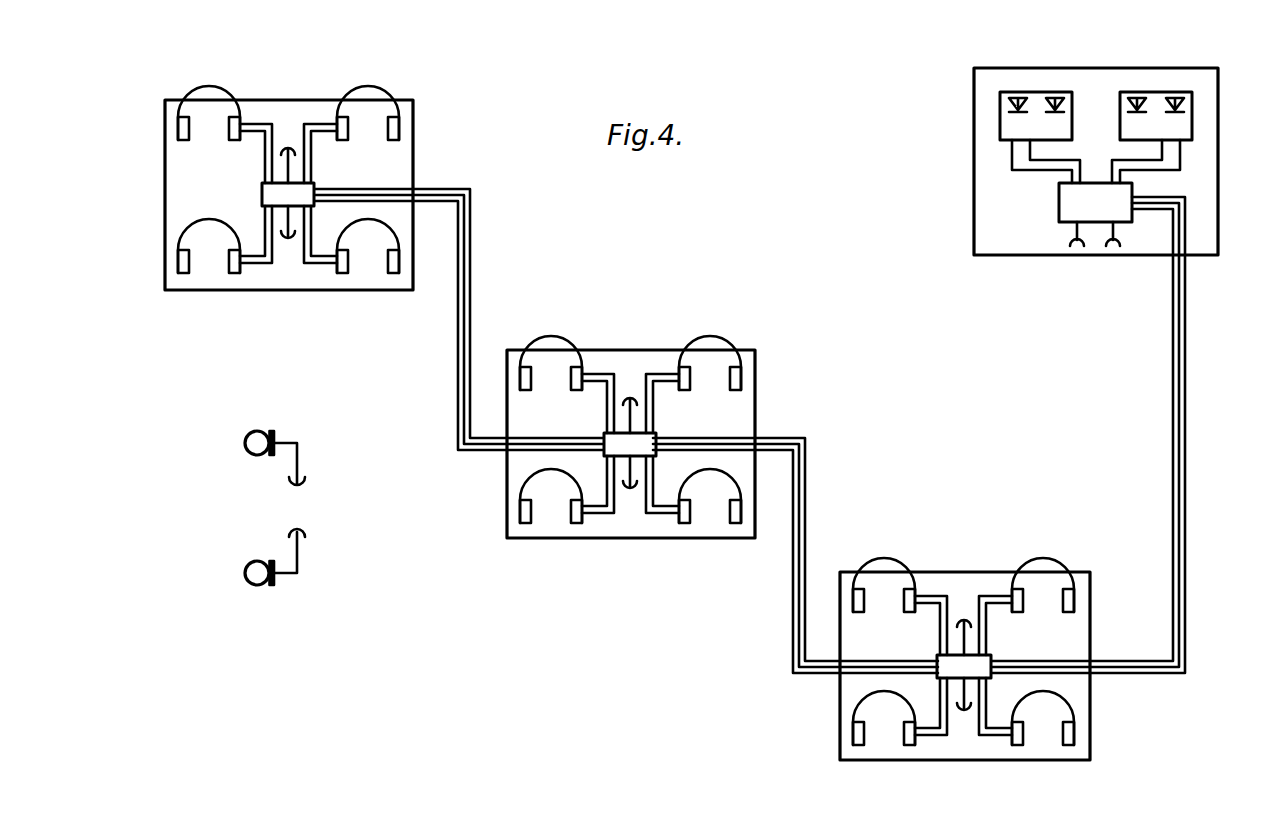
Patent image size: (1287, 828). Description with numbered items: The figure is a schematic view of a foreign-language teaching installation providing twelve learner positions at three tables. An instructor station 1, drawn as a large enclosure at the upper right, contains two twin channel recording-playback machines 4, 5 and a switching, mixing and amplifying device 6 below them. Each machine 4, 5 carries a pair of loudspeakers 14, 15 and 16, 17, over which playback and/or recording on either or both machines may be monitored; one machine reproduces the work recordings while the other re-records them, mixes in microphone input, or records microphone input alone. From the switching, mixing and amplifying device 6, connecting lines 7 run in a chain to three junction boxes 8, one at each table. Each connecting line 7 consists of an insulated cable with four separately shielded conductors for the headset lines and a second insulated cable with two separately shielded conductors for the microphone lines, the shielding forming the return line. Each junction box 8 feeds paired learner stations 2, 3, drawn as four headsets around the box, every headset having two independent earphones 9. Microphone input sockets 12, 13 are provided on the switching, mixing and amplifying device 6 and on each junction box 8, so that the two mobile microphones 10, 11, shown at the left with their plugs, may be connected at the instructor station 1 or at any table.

The instructor station 1 is at (974, 78).
The learner station 2 is at (211, 87).
The learner station 3 is at (183, 230).
The twin channel recording-playback machine 4 is at (1052, 102).
The twin channel recording-playback machine 5 is at (1180, 130).
The switching, mixing and amplifying device 6 is at (1072, 198).
The connecting line 7 is at (458, 270).
The junction box 8 is at (273, 192).
The earphone 9 is at (233, 128).
The mobile microphone 10 is at (245, 443).
The mobile microphone 11 is at (245, 573).
The microphone input socket 12 is at (280, 140).
The microphone input socket 13 is at (291, 244).
The loudspeaker 14 is at (1002, 101).
The loudspeaker 15 is at (1010, 130).
The loudspeaker 16 is at (1133, 98).
The loudspeaker 17 is at (1183, 103).